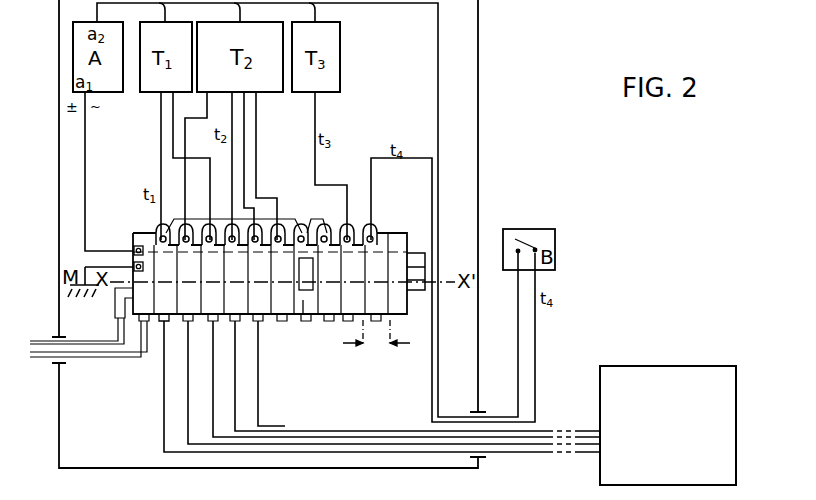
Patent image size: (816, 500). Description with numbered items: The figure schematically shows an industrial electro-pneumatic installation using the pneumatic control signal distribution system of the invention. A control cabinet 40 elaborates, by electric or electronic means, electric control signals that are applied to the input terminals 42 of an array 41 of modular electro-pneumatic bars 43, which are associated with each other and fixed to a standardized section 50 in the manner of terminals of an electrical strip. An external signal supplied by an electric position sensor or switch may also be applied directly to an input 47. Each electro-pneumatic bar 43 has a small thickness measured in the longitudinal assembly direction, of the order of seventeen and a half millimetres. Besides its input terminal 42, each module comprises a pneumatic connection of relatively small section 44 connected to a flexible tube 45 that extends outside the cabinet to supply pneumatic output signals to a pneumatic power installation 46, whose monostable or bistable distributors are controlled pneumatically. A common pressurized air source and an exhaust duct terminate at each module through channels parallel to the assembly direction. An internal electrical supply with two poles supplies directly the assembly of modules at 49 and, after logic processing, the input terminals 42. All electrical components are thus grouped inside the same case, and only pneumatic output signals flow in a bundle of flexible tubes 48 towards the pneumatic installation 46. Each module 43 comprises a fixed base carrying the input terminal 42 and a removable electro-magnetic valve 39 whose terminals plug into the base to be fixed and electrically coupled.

The removable electro-magnetic valve 39 is at (313, 270).
The control cabinet 40 is at (478, 128).
The array of modular electro-pneumatic bars 41 is at (130, 360).
The input terminal 42 is at (160, 236).
The electro-pneumatic bar 43 is at (300, 320).
The pneumatic connection 44 is at (166, 323).
The flexible tube 45 is at (164, 390).
The pneumatic power installation 46 is at (668, 425).
The input 47 is at (372, 236).
The bundle of flexible tubes 48 is at (556, 453).
The assembly supply connection 49 is at (133, 249).
The standardized section 50 is at (418, 253).